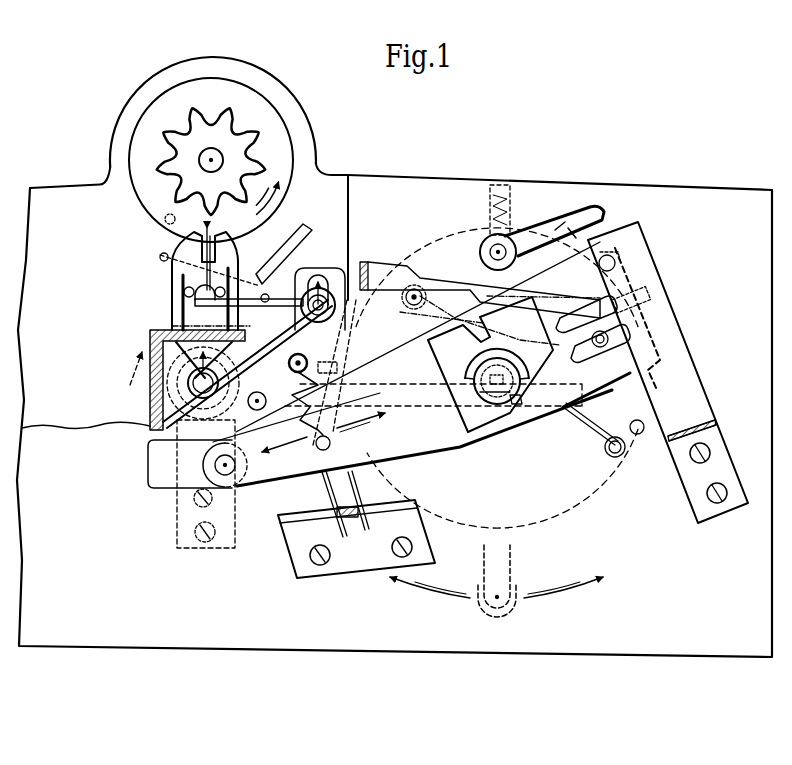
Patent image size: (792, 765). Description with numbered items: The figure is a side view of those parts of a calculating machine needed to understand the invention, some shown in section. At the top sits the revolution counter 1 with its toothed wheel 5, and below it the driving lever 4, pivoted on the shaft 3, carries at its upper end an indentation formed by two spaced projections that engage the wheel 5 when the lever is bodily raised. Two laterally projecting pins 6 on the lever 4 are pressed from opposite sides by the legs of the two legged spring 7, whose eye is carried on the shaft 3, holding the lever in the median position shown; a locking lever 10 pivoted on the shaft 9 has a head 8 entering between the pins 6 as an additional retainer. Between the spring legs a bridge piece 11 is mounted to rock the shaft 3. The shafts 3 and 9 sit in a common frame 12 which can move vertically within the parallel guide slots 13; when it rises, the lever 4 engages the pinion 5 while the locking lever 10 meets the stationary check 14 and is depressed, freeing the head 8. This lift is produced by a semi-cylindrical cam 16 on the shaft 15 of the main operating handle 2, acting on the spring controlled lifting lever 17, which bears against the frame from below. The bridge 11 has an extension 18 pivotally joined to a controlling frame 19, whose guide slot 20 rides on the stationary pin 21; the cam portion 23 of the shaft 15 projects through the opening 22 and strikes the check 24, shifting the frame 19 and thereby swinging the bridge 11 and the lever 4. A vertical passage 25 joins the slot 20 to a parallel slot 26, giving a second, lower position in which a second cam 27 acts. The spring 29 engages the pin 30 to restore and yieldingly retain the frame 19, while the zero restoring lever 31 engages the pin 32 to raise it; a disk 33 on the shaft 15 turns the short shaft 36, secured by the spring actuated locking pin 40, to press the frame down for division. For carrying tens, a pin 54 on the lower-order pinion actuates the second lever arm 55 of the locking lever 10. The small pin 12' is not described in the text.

The revolution counter 1 is at (268, 122).
The main operating handle 2 is at (503, 568).
The shaft 3 is at (197, 397).
The driving lever 4 is at (172, 258).
The toothed wheel 5 is at (236, 156).
The laterally projecting pins 6 is at (183, 280).
The two legged spring 7 is at (172, 313).
The projection or head 8 is at (205, 298).
The shaft 9 is at (330, 294).
The locking lever 10 is at (250, 306).
The bridge piece 11 is at (150, 342).
The frame 12 is at (381, 343).
The lever pin 12' is at (270, 414).
The vertical guide slots 13 is at (193, 358).
The stationary check 14 is at (258, 270).
The shaft 15 is at (485, 392).
The cam 16 is at (473, 364).
The lifting lever 17 is at (410, 395).
The extension 18 is at (160, 456).
The controlling frame 19 is at (297, 460).
The guide slot 20 is at (618, 333).
The stationary pin 21 is at (630, 343).
The opening 22 is at (528, 343).
The semi-cylindrical cam portion 23 is at (520, 376).
The check 24 is at (500, 396).
The vertical passage 25 is at (614, 320).
The slot 26 is at (600, 305).
The second semi-cylindrical cam 27 is at (520, 400).
The spring 29 is at (332, 500).
The laterally projecting pin 30 is at (331, 443).
The zero restoring lever 31 is at (450, 290).
The laterally projecting pin 32 is at (571, 231).
The disk 33 is at (588, 498).
The short shaft 36 is at (505, 243).
The spring actuated locking pin 40 is at (490, 216).
The pin 54 is at (164, 219).
The second lever arm 55 is at (163, 254).